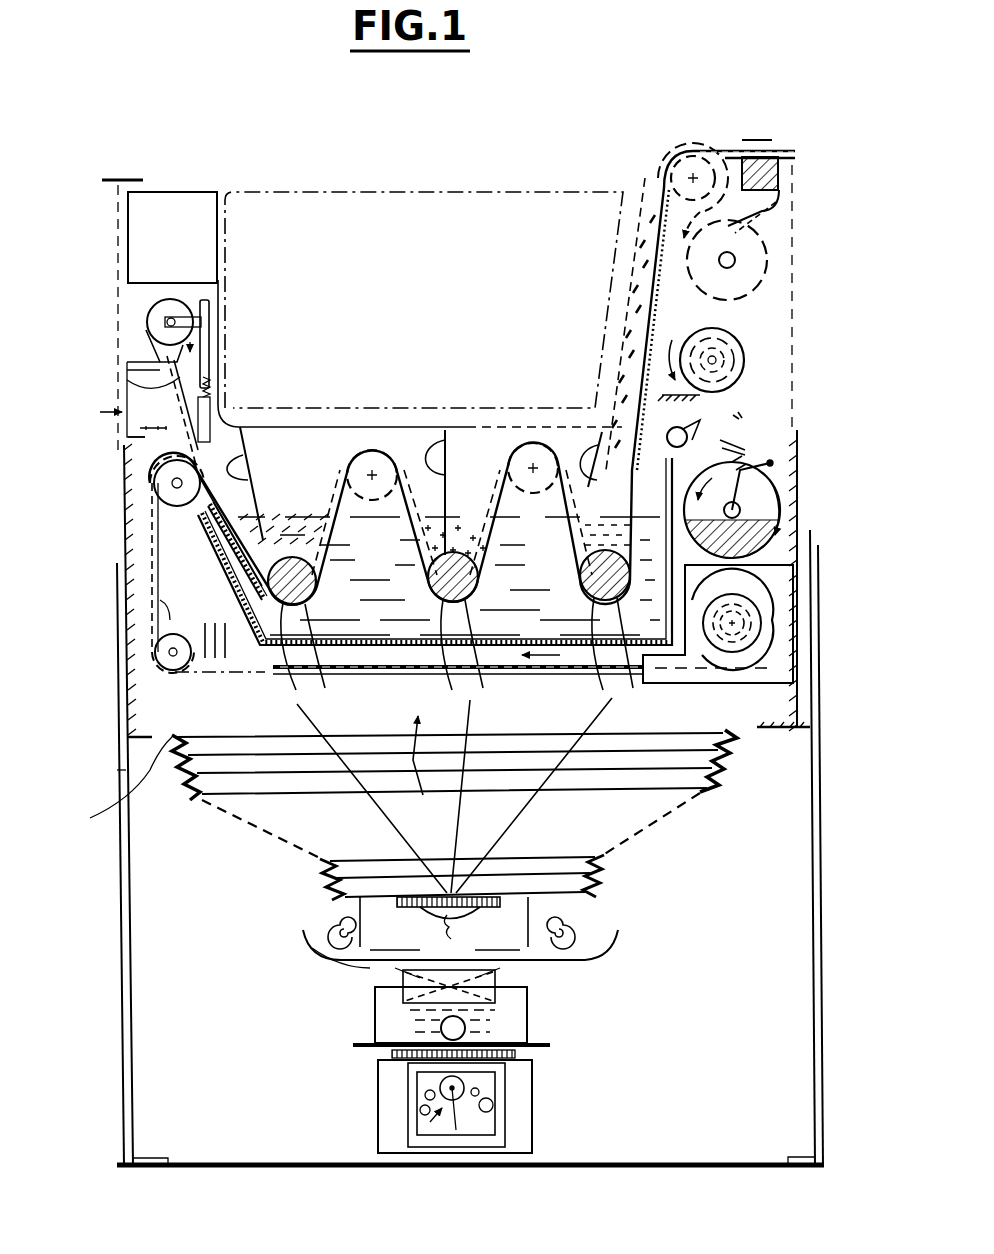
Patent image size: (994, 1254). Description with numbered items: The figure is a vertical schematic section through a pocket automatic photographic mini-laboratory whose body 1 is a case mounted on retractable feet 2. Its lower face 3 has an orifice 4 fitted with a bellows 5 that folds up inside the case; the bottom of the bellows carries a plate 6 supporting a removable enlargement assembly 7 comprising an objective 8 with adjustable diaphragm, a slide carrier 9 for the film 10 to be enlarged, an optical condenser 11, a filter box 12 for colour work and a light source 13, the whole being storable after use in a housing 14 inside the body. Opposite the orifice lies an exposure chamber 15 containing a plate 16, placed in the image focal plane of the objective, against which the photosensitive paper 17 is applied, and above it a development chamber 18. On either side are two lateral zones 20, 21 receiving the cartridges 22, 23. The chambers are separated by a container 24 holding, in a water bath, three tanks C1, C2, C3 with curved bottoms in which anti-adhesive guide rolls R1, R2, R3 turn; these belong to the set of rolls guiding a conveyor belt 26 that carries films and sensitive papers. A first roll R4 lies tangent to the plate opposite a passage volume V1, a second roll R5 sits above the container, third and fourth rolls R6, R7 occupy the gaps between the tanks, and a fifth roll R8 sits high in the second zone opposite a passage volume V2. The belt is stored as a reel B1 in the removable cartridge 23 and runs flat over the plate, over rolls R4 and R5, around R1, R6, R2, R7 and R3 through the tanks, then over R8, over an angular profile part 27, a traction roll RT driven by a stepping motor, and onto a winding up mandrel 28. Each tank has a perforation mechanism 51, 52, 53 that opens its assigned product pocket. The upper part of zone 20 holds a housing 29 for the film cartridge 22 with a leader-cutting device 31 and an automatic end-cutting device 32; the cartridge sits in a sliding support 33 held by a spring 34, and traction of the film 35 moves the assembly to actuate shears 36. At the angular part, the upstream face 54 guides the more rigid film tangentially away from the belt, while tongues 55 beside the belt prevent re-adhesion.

The body 1 is at (124, 501).
The retractable feet 2 is at (122, 970).
The lower face 3 is at (122, 772).
The orifice 4 is at (121, 783).
The bellows 5 is at (728, 756).
The plate 6 is at (336, 909).
The enlargement assembly 7 is at (333, 1041).
The objective 8 is at (476, 911).
The slide carrier 9 is at (588, 957).
The film 10 is at (584, 937).
The optical condenser 11 is at (495, 971).
The filter box 12 is at (514, 1026).
The light source 13 is at (520, 1109).
The housing 14 is at (372, 234).
The exposure chamber 15 is at (490, 731).
The plate 16 is at (458, 678).
The photosensitive paper 17 is at (435, 589).
The development chamber 18 is at (312, 467).
The lateral zone 20 is at (178, 186).
The lateral zone 21 is at (745, 140).
The film cartridge 22 is at (148, 323).
The cartridge 23 is at (780, 668).
The container 24 is at (238, 584).
The conveyor belt 26 is at (175, 615).
The angular profile part 27 is at (784, 178).
The winding up mandrel 28 is at (734, 363).
The housing 29 is at (124, 297).
The device for cutting off the film leader 31 is at (102, 178).
The device for automatically cutting the film 32 is at (100, 412).
The sliding support 33 is at (218, 344).
The spring 34 is at (210, 387).
The film 35 is at (127, 379).
The shears 36 is at (133, 437).
The perforation mechanism 51 is at (250, 500).
The perforation mechanism 52 is at (444, 482).
The perforation mechanism 53 is at (588, 485).
The upstream face 54 is at (755, 155).
The tongues 55 is at (780, 155).
The guide roll R1 is at (267, 632).
The guide roll R2 is at (453, 631).
The guide roll R3 is at (585, 630).
The first roll R4 is at (177, 670).
The second roll R5 is at (178, 506).
The third roll R6 is at (372, 450).
The fourth roll R7 is at (533, 443).
The fifth roll R8 is at (675, 150).
The traction roll RT is at (760, 265).
The reel B1 is at (778, 613).
The tank C1 is at (307, 658).
The tank C2 is at (474, 654).
The tank C3 is at (612, 653).
The passage volume V1 is at (196, 586).
The passage volume V2 is at (636, 456).